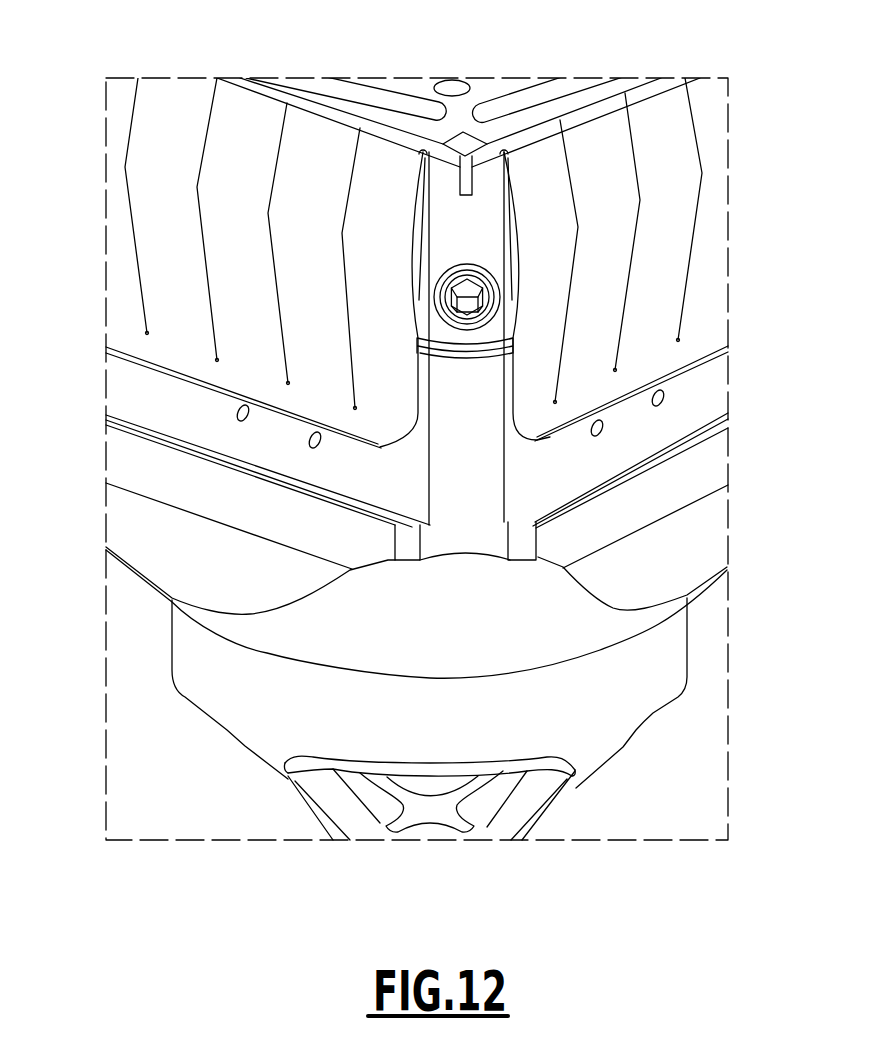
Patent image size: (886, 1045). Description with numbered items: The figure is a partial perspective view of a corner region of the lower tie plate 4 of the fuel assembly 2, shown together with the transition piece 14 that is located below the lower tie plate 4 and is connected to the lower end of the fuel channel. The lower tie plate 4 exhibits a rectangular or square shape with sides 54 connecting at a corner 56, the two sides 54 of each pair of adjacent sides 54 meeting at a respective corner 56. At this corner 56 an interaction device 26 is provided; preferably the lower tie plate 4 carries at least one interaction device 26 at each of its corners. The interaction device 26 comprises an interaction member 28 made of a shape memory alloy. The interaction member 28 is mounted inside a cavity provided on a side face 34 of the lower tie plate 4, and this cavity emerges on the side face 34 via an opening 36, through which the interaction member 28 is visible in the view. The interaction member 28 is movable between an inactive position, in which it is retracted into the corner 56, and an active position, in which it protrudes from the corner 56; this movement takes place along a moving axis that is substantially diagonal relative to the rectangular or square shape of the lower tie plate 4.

The fuel assembly 2 is at (745, 42).
The interaction device 26 is at (752, 162).
The lower tie plate 4 is at (700, 392).
The side face 34 is at (642, 428).
The sides 54 is at (147, 395).
The corner 56 is at (462, 482).
The interaction member 28 is at (493, 306).
The opening 36 is at (472, 267).
The transition piece 14 is at (563, 630).